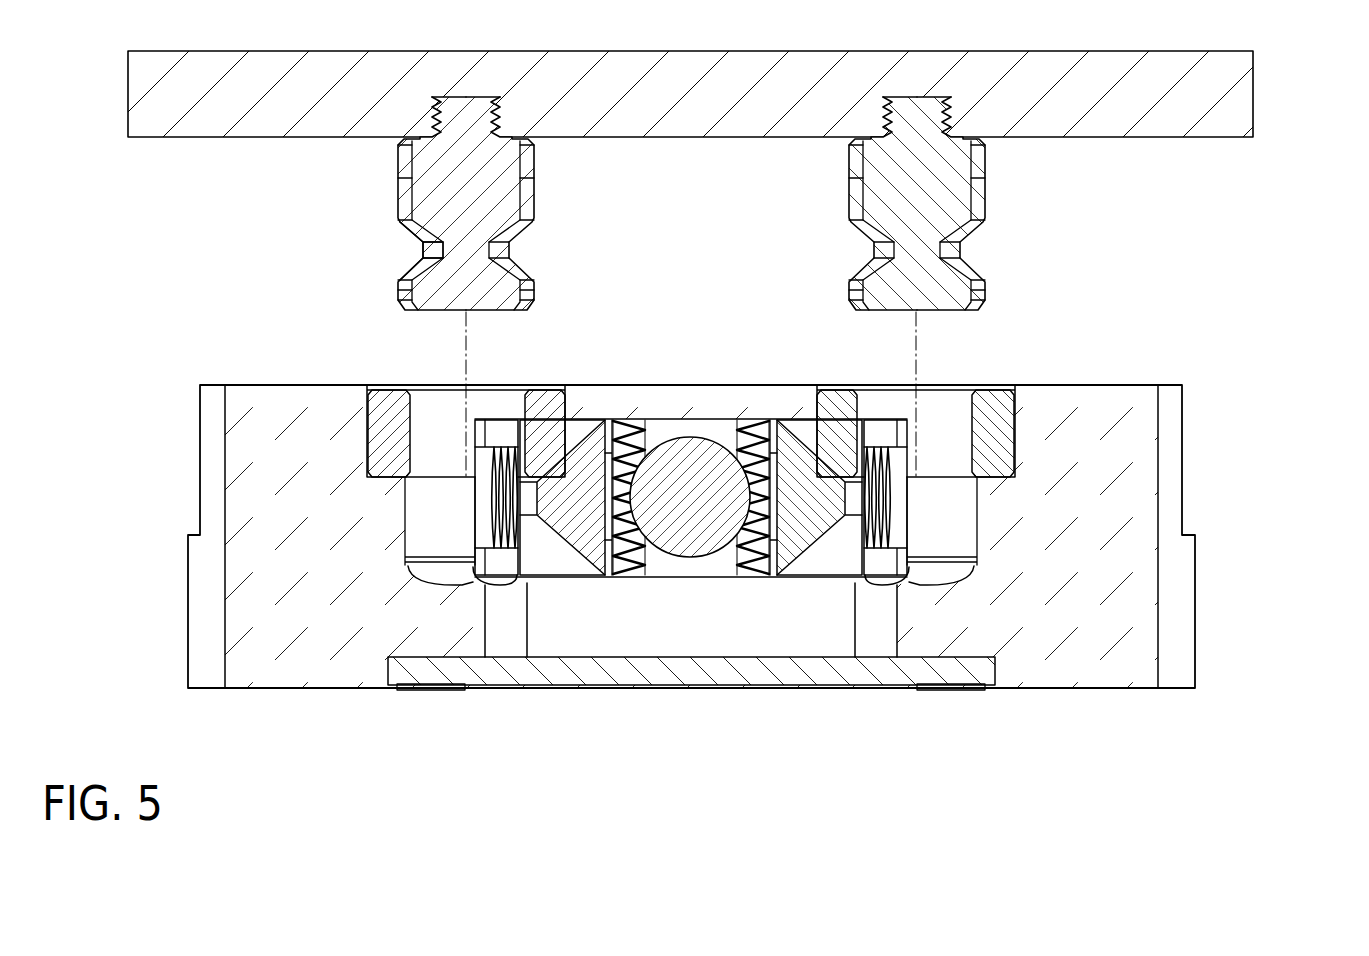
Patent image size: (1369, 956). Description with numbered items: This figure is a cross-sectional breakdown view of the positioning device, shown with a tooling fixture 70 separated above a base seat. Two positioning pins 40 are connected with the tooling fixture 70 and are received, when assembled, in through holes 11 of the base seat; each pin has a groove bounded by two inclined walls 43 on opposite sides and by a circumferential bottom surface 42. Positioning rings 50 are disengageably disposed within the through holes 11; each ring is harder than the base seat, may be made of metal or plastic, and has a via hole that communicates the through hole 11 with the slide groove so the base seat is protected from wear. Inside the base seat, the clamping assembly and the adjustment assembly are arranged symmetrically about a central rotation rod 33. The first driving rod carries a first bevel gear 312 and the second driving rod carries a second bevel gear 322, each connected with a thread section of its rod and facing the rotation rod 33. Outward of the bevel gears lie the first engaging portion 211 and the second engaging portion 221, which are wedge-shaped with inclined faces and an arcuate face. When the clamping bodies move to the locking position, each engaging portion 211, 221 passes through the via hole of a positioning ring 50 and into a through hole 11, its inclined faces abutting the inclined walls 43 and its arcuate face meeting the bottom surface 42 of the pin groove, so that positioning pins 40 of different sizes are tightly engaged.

The tooling fixture 70 is at (1240, 90).
The positioning pin 40 is at (407, 193).
The inclined wall 43 is at (418, 230).
The circumferential bottom surface 42 is at (432, 252).
The through hole 11 is at (940, 405).
The positioning ring 50 is at (1003, 437).
The second engaging portion 221 is at (527, 503).
The first engaging portion 211 is at (857, 505).
The second bevel gear 322 is at (630, 577).
The first bevel gear 312 is at (750, 577).
The rotation rod 33 is at (690, 545).